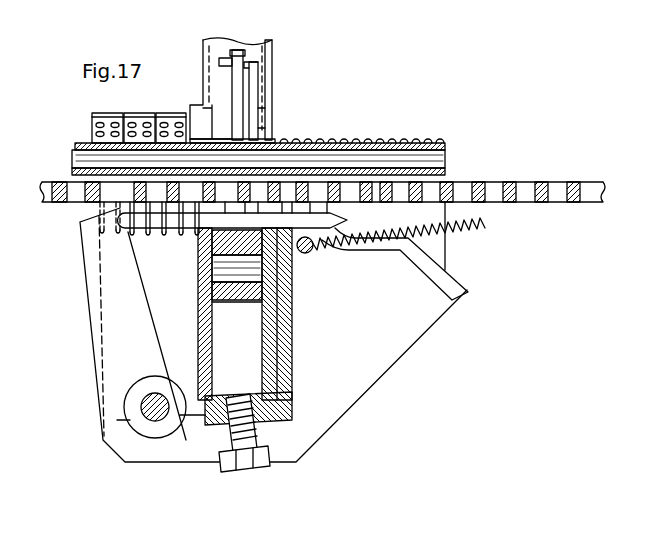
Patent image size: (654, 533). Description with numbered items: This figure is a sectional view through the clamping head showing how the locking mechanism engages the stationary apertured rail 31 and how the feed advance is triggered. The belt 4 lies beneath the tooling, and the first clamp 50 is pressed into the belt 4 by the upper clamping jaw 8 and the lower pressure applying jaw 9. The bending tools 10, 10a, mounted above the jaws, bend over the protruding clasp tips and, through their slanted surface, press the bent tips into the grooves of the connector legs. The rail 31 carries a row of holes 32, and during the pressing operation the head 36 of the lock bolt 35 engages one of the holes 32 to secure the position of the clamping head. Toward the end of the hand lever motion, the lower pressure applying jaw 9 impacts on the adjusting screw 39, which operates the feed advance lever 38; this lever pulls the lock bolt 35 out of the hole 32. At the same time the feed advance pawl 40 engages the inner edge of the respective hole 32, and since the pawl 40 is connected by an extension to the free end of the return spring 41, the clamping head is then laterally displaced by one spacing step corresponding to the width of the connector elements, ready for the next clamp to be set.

The belt 4 is at (447, 158).
The upper clamping jaw 8 is at (237, 50).
The lower pressure applying jaw 9 is at (196, 237).
The bending tool 10 is at (258, 63).
The bending tool 10a is at (222, 58).
The rail 31 is at (575, 183).
The holes 32 is at (341, 188).
The lock bolt 35 is at (273, 355).
The head 36 is at (279, 188).
The feed advance lever 38 is at (112, 284).
The adjusting screw 39 is at (244, 466).
The feed advance pawl 40 is at (347, 220).
The return spring 41 is at (392, 276).
The first clamp 50 is at (402, 140).